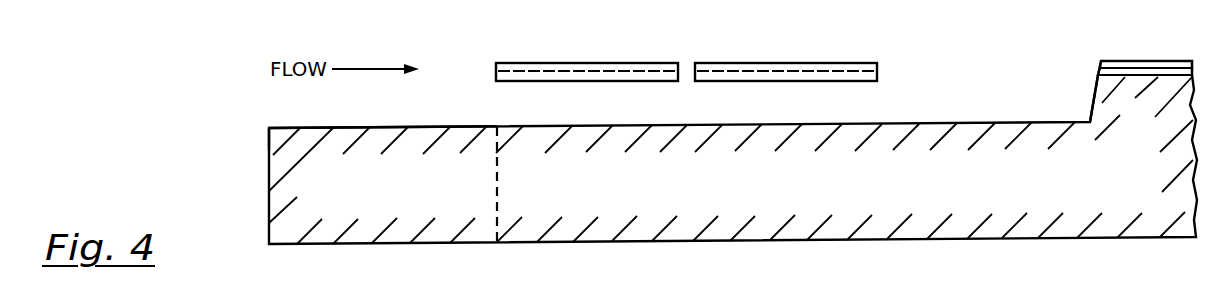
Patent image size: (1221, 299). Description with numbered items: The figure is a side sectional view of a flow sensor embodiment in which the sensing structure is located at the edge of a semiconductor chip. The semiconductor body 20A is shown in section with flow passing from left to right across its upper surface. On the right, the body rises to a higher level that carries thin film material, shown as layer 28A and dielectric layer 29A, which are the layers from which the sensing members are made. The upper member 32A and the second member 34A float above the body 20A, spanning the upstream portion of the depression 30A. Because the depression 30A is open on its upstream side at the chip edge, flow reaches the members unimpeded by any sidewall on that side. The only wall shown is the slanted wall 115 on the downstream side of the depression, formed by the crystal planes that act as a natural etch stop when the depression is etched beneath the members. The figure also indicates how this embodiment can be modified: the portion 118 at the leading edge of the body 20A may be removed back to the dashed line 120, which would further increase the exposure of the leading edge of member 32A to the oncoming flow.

The body 20A is at (730, 197).
The depression 30A is at (458, 114).
The member 32A is at (613, 56).
The member 34A is at (826, 56).
The layer 28A is at (1122, 62).
The dielectric layer 29A is at (1104, 73).
The slanted wall 115 is at (1069, 104).
The portion 118 is at (295, 131).
The line 120 is at (498, 185).